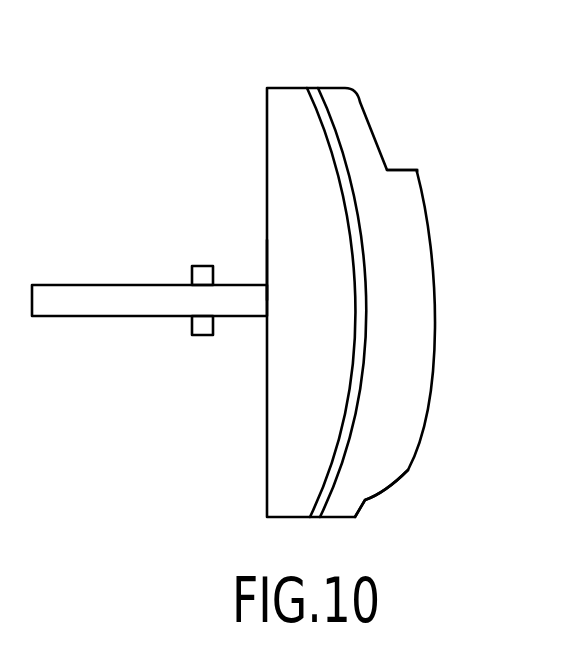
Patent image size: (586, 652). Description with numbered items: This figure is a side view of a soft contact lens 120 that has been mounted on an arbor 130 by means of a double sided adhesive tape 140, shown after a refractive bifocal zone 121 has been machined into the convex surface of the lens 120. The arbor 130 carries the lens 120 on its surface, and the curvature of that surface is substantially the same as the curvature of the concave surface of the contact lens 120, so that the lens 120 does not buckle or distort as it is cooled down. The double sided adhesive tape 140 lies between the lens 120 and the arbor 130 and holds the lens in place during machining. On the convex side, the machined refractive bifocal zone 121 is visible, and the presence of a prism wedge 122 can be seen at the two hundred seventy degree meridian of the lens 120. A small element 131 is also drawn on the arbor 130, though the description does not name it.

The soft contact lens 120 is at (348, 113).
The refractive bifocal zone 121 is at (405, 188).
The prism wedge 122 is at (365, 503).
The arbor 130 is at (292, 243).
The pin 131 is at (200, 280).
The double sided adhesive tape 140 is at (347, 188).